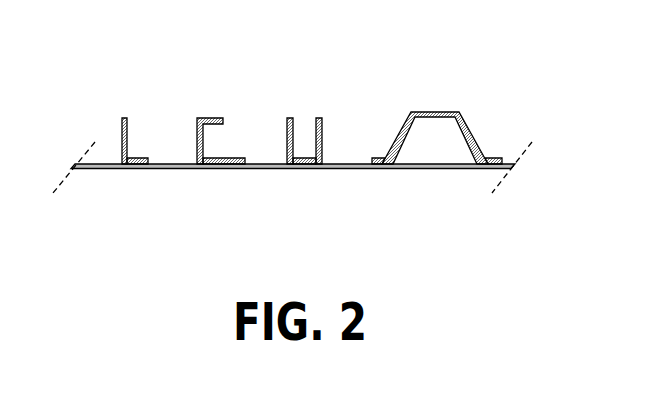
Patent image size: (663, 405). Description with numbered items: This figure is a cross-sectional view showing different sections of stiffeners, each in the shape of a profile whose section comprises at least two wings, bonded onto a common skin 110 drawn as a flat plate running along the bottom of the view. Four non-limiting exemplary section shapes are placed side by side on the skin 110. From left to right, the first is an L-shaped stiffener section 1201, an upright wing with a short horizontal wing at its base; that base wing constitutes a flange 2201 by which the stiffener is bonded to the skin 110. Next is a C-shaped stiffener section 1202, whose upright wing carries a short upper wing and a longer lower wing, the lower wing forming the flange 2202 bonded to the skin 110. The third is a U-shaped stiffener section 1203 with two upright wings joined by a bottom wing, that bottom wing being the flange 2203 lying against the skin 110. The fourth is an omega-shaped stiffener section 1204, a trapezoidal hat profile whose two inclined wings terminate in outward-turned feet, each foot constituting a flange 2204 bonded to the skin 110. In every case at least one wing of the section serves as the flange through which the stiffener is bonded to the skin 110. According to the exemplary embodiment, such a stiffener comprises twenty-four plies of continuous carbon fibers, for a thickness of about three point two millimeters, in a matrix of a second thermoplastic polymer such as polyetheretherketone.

The skin 110 is at (270, 169).
The L-shaped stiffener section 1201 is at (127, 130).
The flange 2201 is at (163, 144).
The C-shaped stiffener section 1202 is at (204, 143).
The flange 2202 is at (250, 145).
The U-shaped stiffener section 1203 is at (322, 141).
The flange 2203 is at (303, 158).
The omega-shaped stiffener section 1204 is at (437, 112).
The flange 2204 is at (508, 115).